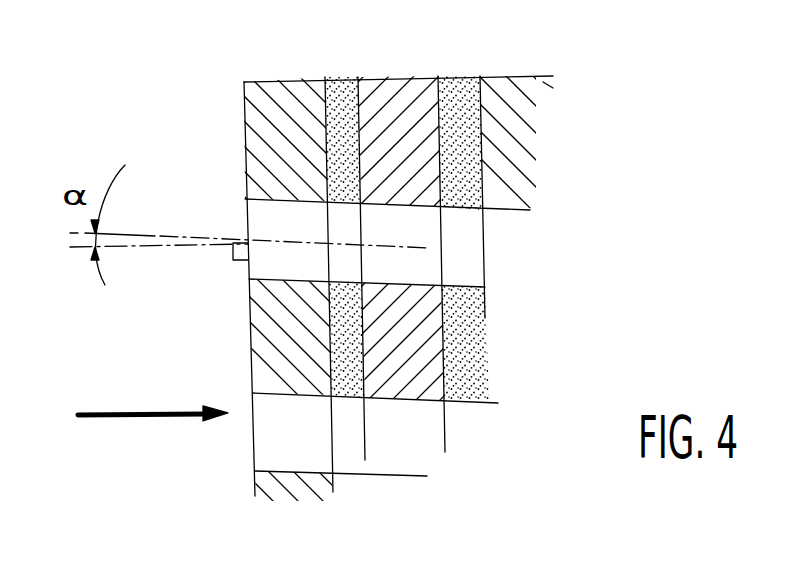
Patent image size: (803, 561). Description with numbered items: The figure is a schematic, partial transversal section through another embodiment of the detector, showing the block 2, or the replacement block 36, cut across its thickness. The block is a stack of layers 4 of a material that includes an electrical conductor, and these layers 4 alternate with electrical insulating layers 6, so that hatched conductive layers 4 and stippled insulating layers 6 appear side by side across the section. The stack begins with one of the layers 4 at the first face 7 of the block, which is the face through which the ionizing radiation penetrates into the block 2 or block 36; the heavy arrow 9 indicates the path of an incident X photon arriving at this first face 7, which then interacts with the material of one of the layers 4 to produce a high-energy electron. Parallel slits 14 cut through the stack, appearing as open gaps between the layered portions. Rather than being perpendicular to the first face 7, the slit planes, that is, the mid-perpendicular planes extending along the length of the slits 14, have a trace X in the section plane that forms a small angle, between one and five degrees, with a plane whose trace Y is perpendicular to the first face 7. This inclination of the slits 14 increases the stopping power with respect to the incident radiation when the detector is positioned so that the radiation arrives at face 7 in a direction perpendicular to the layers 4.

The block 2 is at (562, 280).
The block 36 is at (545, 161).
The layers 4 is at (277, 118).
The electrical insulating layers 6 is at (341, 112).
The first face 7 is at (240, 113).
The path of incident X photon 9 is at (93, 418).
The slits 14 is at (430, 272).
The trace of slit plane X is at (145, 235).
The trace of perpendicular plane Y is at (173, 248).